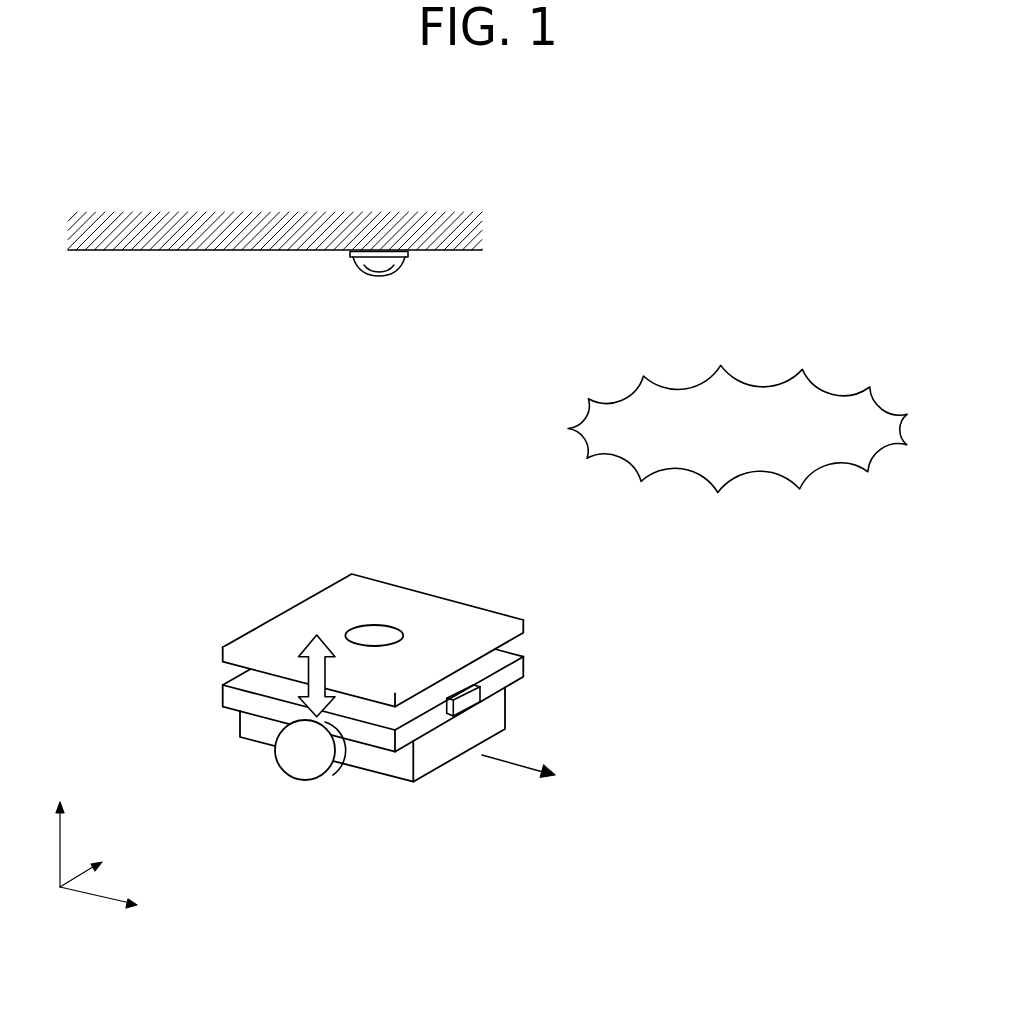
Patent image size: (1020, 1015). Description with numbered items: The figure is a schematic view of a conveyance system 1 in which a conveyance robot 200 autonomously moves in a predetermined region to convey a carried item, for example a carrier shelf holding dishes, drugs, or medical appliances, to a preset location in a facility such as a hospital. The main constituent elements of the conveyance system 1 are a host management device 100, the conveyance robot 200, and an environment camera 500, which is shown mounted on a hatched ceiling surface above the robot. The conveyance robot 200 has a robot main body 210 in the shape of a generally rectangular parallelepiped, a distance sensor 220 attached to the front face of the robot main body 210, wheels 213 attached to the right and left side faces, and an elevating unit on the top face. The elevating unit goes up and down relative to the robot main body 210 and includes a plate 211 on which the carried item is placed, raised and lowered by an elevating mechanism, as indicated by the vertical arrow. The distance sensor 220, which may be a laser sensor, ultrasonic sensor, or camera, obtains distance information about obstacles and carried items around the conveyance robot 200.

The conveyance system 1 is at (53, 135).
The host management device 100 is at (597, 410).
The conveyance robot 200 is at (353, 673).
The robot main body 210 is at (522, 652).
The plate 211 is at (330, 605).
The wheels 213 is at (303, 763).
The distance sensor 220 is at (480, 687).
The environment camera 500 is at (358, 262).